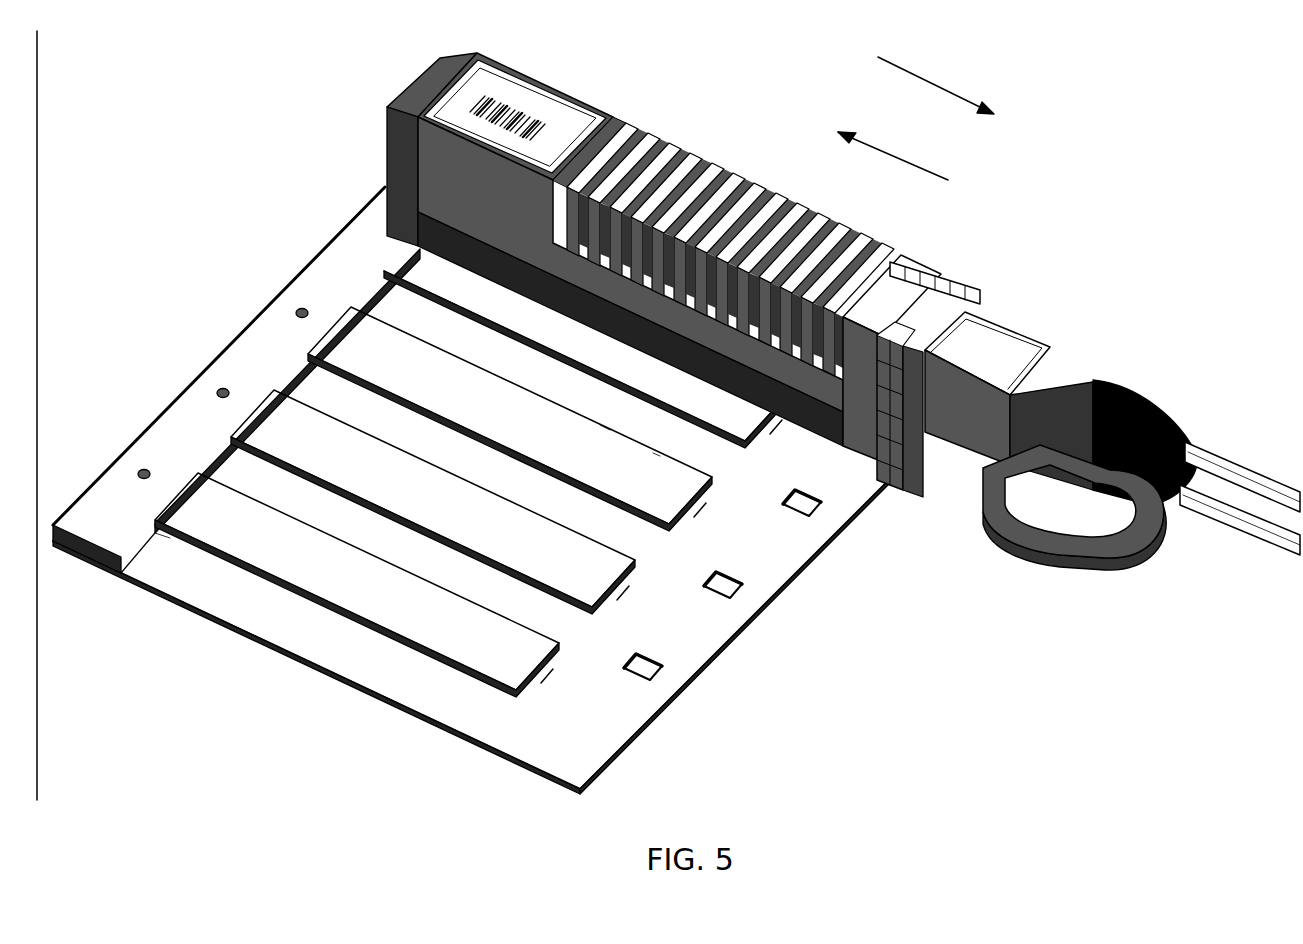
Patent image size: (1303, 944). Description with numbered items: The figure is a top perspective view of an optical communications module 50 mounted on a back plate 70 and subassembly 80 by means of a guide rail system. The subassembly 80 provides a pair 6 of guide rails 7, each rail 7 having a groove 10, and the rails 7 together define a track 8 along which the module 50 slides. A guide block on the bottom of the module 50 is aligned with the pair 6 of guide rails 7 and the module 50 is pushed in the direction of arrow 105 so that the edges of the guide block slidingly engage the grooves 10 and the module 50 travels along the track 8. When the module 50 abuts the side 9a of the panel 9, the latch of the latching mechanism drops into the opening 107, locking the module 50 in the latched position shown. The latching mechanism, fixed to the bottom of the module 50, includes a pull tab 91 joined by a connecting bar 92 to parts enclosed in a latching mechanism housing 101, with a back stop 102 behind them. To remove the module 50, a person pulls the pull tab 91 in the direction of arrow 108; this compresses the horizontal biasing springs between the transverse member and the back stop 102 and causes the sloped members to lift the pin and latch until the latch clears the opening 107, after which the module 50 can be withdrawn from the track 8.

The pair of guide rails 6 is at (672, 410).
The guide rail 7 is at (682, 382).
The track 8 is at (533, 373).
The panel 9 is at (297, 292).
The side of the panel 9a is at (297, 378).
The groove 10 is at (723, 433).
The optical communications module 50 is at (720, 188).
The back plate 70 is at (540, 740).
The subassembly 80 is at (225, 525).
The pull tab 91 is at (1125, 555).
The connecting bar 92 is at (970, 463).
The latching mechanism housing 101 is at (867, 440).
The back stop 102 is at (920, 463).
The arrow indicating insertion direction 105 is at (726, 184).
The opening 107 is at (817, 507).
The arrow indicating pull direction 108 is at (953, 69).